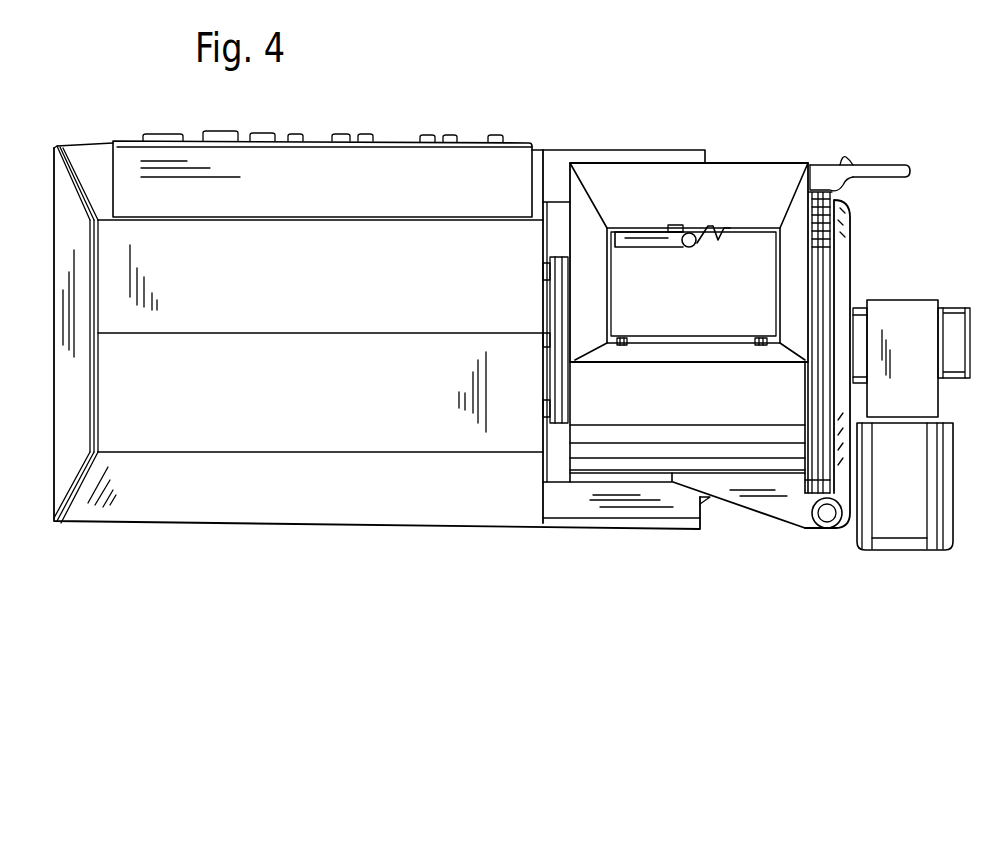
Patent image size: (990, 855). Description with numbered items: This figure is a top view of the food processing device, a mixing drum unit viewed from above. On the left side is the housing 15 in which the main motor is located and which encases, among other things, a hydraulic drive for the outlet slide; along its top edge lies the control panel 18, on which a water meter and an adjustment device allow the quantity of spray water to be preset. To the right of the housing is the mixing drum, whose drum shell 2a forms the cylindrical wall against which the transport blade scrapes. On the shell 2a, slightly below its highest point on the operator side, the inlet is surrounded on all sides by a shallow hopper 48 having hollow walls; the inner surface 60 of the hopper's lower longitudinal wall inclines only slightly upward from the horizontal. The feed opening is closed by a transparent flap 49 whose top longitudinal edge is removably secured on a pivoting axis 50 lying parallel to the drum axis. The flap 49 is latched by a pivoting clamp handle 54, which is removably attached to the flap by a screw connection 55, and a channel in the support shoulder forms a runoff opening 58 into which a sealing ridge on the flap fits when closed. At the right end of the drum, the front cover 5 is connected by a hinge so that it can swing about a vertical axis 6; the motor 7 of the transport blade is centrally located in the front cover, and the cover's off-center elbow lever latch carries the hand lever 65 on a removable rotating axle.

The housing 15 is at (304, 297).
The control panel 18 is at (388, 165).
The drum shell 2a is at (734, 432).
The inner surface 60 is at (768, 216).
The flap 49 is at (699, 318).
The clamp handle 54 is at (645, 246).
The screw connection 55 is at (688, 233).
The runoff opening 58 is at (713, 243).
The pivoting axis 50 is at (640, 347).
The hopper 48 is at (793, 237).
The front cover 5 is at (838, 266).
The hand lever 65 is at (880, 170).
The vertical axis 6 is at (825, 522).
The motor 7 is at (909, 483).